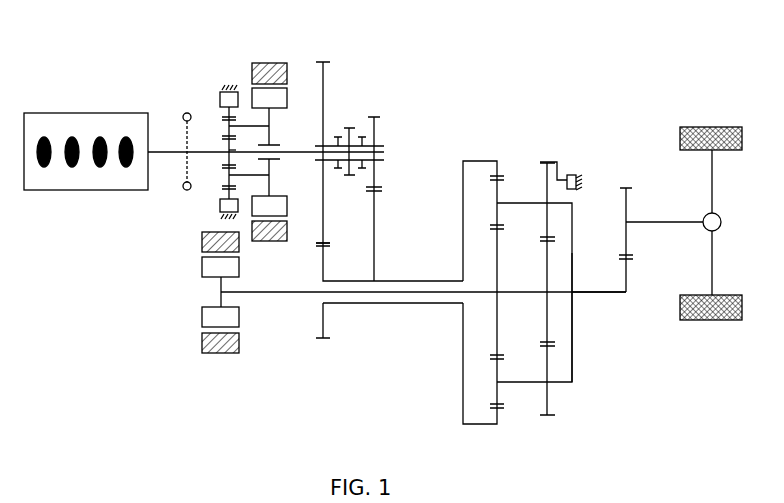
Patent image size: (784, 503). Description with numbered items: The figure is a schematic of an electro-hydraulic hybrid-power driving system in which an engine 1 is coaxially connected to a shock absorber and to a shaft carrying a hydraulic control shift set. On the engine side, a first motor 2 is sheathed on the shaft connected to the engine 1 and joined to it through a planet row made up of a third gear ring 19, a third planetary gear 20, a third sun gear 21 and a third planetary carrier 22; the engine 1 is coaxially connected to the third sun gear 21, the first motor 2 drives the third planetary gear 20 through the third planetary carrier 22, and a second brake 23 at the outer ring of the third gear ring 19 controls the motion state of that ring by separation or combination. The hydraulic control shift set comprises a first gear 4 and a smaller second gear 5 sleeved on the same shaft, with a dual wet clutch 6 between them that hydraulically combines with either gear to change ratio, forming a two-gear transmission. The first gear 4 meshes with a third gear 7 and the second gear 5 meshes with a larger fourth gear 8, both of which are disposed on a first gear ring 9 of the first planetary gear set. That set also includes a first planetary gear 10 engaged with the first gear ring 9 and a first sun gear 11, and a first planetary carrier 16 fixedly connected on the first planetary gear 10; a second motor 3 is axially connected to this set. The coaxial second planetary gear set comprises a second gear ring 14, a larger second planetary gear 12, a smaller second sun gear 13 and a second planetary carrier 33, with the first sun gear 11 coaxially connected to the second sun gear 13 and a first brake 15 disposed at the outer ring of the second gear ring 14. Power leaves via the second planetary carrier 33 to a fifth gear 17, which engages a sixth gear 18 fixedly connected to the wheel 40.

The engine 1 is at (38, 178).
The first motor 2 is at (253, 108).
The second motor 3 is at (202, 352).
The first gear 4 is at (323, 95).
The second gear 5 is at (376, 135).
The dual wet clutch 6 is at (351, 129).
The third gear 7 is at (323, 268).
The fourth gear 8 is at (374, 258).
The first gear ring 9 is at (477, 160).
The first planetary gear 10 is at (498, 192).
The first sun gear 11 is at (498, 277).
The second planetary gear 12 is at (547, 230).
The second sun gear 13 is at (547, 322).
The second gear ring 14 is at (541, 162).
The first brake 15 is at (580, 182).
The first planetary carrier 16 is at (507, 203).
The fifth gear 17 is at (603, 293).
The sixth gear 18 is at (627, 212).
The third gear ring 19 is at (229, 108).
The third planetary gear 20 is at (229, 123).
The third sun gear 21 is at (229, 152).
The third planetary carrier 22 is at (240, 126).
The second brake 23 is at (228, 90).
The second planetary carrier 33 is at (573, 254).
The wheel 40 is at (741, 126).